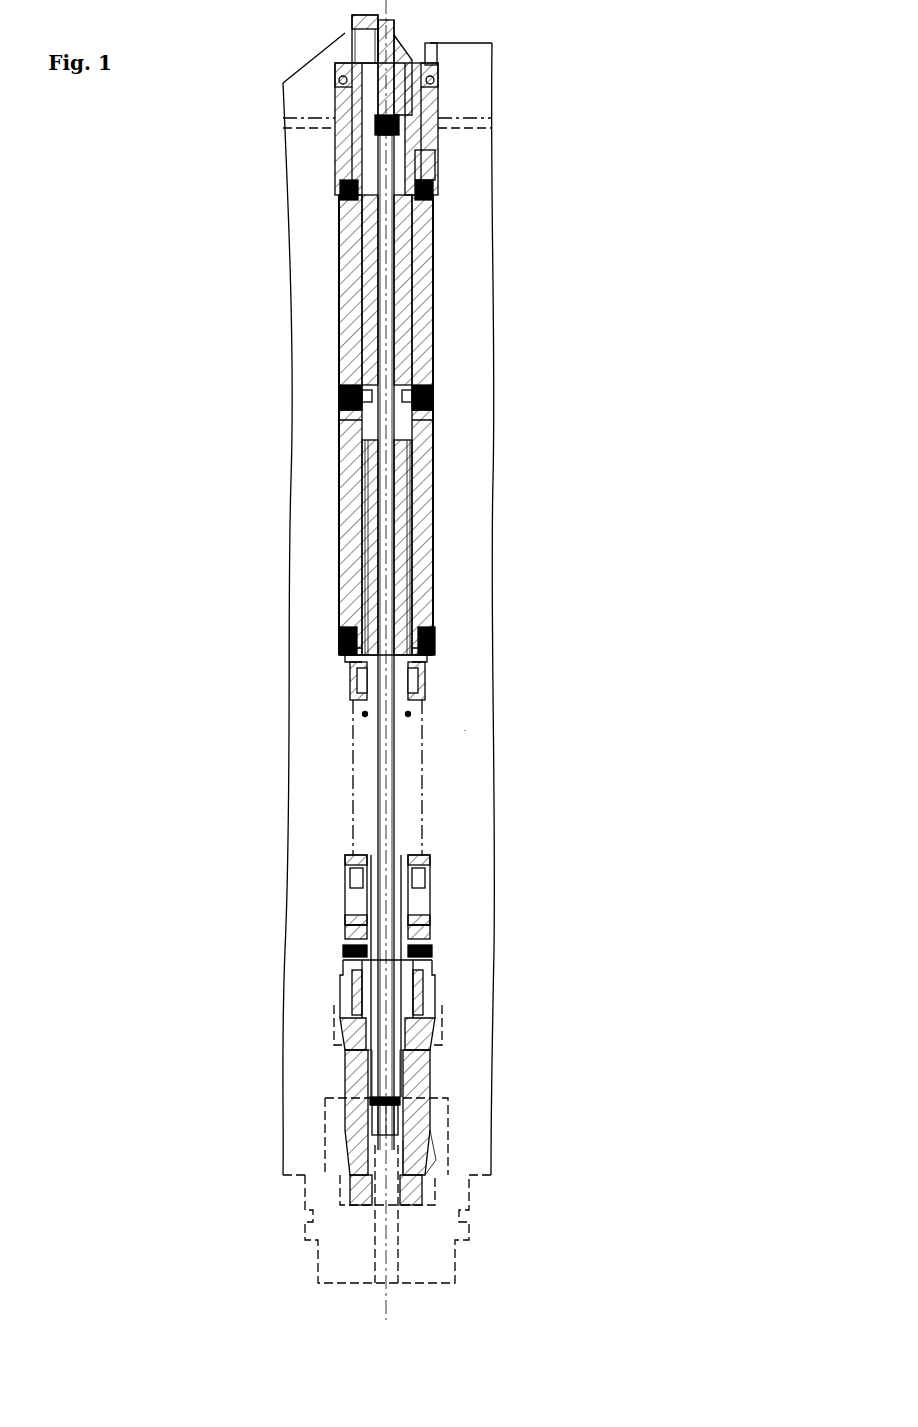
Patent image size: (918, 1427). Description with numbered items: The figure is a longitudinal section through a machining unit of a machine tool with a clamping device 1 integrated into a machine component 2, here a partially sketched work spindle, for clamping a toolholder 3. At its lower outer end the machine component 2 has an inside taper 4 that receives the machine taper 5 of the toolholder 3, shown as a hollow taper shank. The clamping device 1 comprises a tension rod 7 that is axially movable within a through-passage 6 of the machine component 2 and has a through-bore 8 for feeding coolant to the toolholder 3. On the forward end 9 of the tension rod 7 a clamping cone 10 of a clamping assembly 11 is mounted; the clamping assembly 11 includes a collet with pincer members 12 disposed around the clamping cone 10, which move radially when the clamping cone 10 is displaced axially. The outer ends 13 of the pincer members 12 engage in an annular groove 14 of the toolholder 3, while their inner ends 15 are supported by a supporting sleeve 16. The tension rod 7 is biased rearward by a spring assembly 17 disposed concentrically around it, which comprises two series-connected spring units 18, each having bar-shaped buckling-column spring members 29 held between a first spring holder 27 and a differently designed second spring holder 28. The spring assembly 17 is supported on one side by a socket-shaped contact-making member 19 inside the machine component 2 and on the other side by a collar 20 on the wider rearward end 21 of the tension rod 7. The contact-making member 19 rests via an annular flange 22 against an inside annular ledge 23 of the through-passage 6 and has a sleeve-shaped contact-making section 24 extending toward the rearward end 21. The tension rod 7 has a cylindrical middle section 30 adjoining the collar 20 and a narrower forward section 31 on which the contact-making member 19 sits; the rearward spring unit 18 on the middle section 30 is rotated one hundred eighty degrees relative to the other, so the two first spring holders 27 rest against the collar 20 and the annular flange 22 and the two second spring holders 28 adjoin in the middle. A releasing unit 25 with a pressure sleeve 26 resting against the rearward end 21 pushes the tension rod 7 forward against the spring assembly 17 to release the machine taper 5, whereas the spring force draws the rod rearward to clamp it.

The clamping device 1 is at (467, 730).
The machine component 2 is at (303, 455).
The toolholder 3 is at (432, 1235).
The inside taper 4 is at (342, 1115).
The machine taper 5 is at (438, 1115).
The through-passage 6 is at (348, 740).
The tension rod 7 is at (414, 830).
The through-bore 8 is at (390, 850).
The forward end 9 is at (400, 1105).
The clamping cone 10 is at (357, 1172).
The clamping assembly 11 is at (322, 1005).
The pincer members 12 is at (347, 1063).
The outer ends 13 is at (434, 1153).
The annular groove 14 is at (435, 1163).
The inner ends 15 is at (434, 1033).
The supporting sleeve 16 is at (436, 1022).
The spring assembly 17 is at (448, 400).
The spring units 18 is at (436, 273).
The contact-making member 19 is at (350, 680).
The collar 20 is at (445, 178).
The rearward end 21 is at (345, 160).
The annular flange 22 is at (428, 655).
The inside annular ledge 23 is at (430, 675).
The sleeve-shaped contact-making section 24 is at (412, 530).
The releasing unit 25 is at (442, 50).
The pressure sleeve 26 is at (352, 50).
The first spring holder 27 is at (352, 195).
The second spring holder 28 is at (350, 403).
The spring members 29 is at (350, 275).
The cylindrical middle section 30 is at (370, 345).
The narrower forward section 31 is at (377, 525).